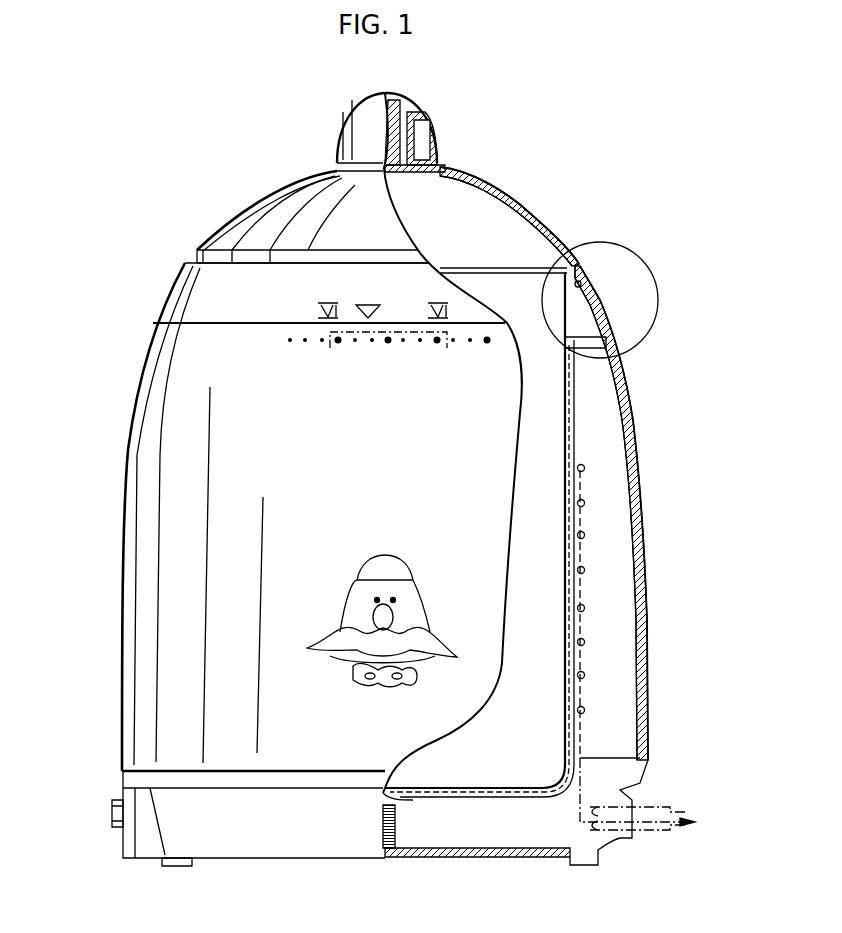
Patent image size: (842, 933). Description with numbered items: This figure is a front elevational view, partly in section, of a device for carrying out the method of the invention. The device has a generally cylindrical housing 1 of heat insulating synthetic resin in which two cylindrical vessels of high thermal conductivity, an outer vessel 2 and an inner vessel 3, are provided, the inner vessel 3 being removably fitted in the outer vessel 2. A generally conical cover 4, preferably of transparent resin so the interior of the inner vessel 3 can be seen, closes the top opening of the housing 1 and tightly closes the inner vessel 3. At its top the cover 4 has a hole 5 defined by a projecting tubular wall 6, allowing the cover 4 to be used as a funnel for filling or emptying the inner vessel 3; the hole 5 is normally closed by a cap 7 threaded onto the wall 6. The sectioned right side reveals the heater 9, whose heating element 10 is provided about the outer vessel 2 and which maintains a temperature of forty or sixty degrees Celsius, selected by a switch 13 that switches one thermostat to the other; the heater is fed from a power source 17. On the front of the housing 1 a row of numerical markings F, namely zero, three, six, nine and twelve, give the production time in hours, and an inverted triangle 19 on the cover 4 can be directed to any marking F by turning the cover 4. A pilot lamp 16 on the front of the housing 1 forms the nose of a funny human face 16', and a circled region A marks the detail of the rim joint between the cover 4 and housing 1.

The housing 1 is at (633, 408).
The outer vessel 2 is at (583, 624).
The inner vessel 3 is at (564, 553).
The cover 4 is at (527, 208).
The hole 5 is at (390, 127).
The projecting tubular wall 6 is at (423, 150).
The cap 7 is at (357, 133).
The heater 9 is at (588, 535).
The heating element 10 is at (588, 468).
The switch 13 is at (112, 810).
The pilot lamp 16 is at (326, 617).
The funny human face 16' is at (361, 621).
The inverted triangle 19 is at (368, 304).
The power source 17 is at (663, 794).
The detail area A is at (655, 320).
The numerical markings F is at (430, 372).